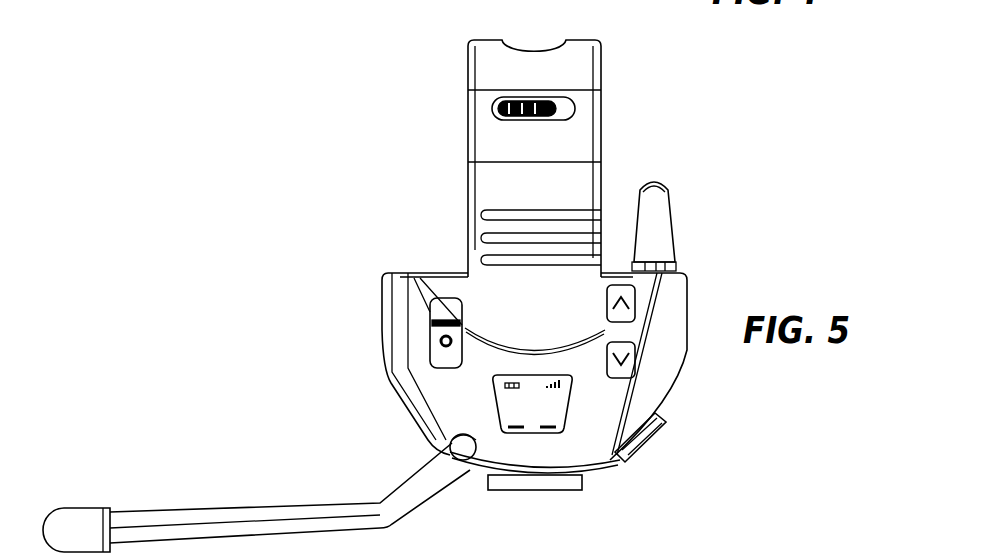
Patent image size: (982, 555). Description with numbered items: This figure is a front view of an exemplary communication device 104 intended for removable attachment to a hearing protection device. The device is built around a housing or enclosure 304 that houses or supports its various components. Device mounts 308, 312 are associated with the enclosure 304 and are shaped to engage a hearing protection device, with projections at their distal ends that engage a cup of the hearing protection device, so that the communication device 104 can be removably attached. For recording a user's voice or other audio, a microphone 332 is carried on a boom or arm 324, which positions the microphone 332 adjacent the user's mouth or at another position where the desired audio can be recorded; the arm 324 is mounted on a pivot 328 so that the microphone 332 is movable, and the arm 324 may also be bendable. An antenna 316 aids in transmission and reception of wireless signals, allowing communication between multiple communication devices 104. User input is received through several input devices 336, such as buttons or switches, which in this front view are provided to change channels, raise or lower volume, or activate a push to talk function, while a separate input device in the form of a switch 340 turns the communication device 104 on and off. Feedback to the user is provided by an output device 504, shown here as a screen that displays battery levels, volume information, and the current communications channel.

The communication device 104 is at (284, 272).
The enclosure 304 is at (690, 313).
The device mount 308 is at (570, 492).
The device mount 312 is at (485, 40).
The antenna 316 is at (657, 182).
The arm 324 is at (325, 503).
The pivot 328 is at (463, 463).
The microphone 332 is at (73, 507).
The input devices 336 is at (447, 300).
The switch 340 is at (497, 122).
The output device 504 is at (503, 375).